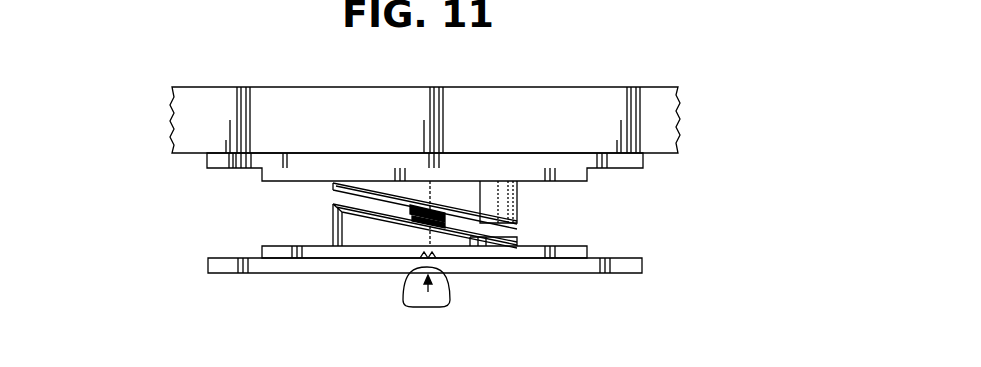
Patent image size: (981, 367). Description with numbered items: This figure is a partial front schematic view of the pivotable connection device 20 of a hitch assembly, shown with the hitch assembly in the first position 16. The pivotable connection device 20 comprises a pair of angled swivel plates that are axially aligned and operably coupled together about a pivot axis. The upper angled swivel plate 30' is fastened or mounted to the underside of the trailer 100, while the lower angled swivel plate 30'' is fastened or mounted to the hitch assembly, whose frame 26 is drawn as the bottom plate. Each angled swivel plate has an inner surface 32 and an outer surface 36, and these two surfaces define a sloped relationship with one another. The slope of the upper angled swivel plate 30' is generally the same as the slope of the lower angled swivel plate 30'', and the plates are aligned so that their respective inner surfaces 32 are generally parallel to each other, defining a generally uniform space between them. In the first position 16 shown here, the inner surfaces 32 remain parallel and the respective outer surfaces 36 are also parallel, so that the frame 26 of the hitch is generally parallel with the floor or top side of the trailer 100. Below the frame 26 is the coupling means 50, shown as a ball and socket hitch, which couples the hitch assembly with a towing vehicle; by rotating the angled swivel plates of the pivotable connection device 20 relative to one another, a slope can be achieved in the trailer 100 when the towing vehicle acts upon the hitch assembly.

The trailer 100 is at (566, 83).
The pivotable connection device 20 is at (188, 218).
The outer surface 36 is at (278, 168).
The inner surface 32 is at (468, 214).
The upper angled swivel plate 30' is at (431, 199).
The lower angled swivel plate 30'' is at (457, 231).
The frame 26 is at (575, 266).
The coupling means 50 is at (402, 287).
The first position 16 is at (430, 291).